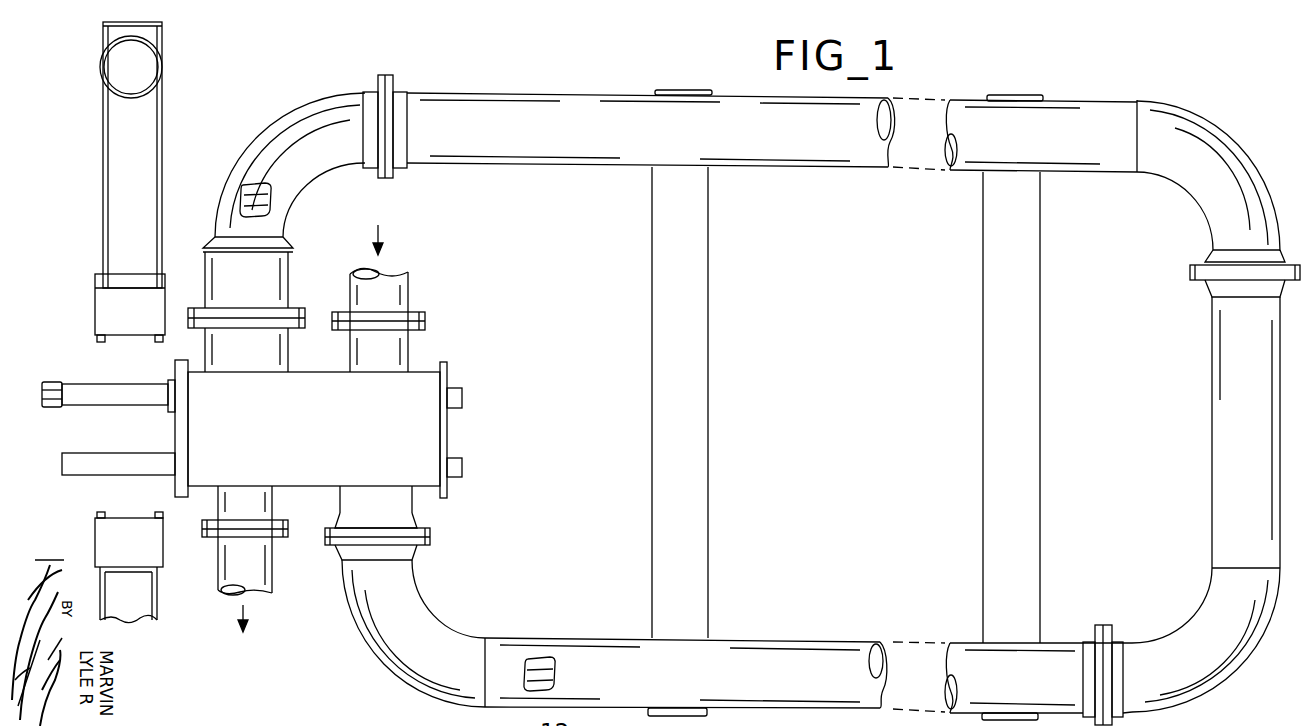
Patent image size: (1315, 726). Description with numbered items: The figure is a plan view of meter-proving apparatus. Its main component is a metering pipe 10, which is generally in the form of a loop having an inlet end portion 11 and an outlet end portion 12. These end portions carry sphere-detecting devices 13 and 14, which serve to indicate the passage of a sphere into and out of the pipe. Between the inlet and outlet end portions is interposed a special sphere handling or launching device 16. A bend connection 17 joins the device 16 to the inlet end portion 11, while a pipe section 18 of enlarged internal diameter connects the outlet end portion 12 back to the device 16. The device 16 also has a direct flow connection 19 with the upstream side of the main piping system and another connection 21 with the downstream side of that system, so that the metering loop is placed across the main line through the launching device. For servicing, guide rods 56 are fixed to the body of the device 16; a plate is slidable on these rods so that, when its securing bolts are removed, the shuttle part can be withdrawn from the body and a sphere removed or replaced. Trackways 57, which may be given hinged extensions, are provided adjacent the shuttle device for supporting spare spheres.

The metering pipe 10 is at (553, 94).
The inlet end portion 11 is at (785, 641).
The outlet end portion 12 is at (265, 125).
The sphere-detecting device 13 is at (548, 657).
The sphere-detecting device 14 is at (272, 197).
The sphere handling or launching device 16 is at (470, 375).
The bend connection 17 is at (434, 612).
The pipe section of enlarged internal diameter 18 is at (290, 282).
The direct flow connection 19 is at (408, 345).
The connection 21 is at (275, 505).
The guide rods 56 is at (63, 455).
The trackways 57 is at (103, 129).